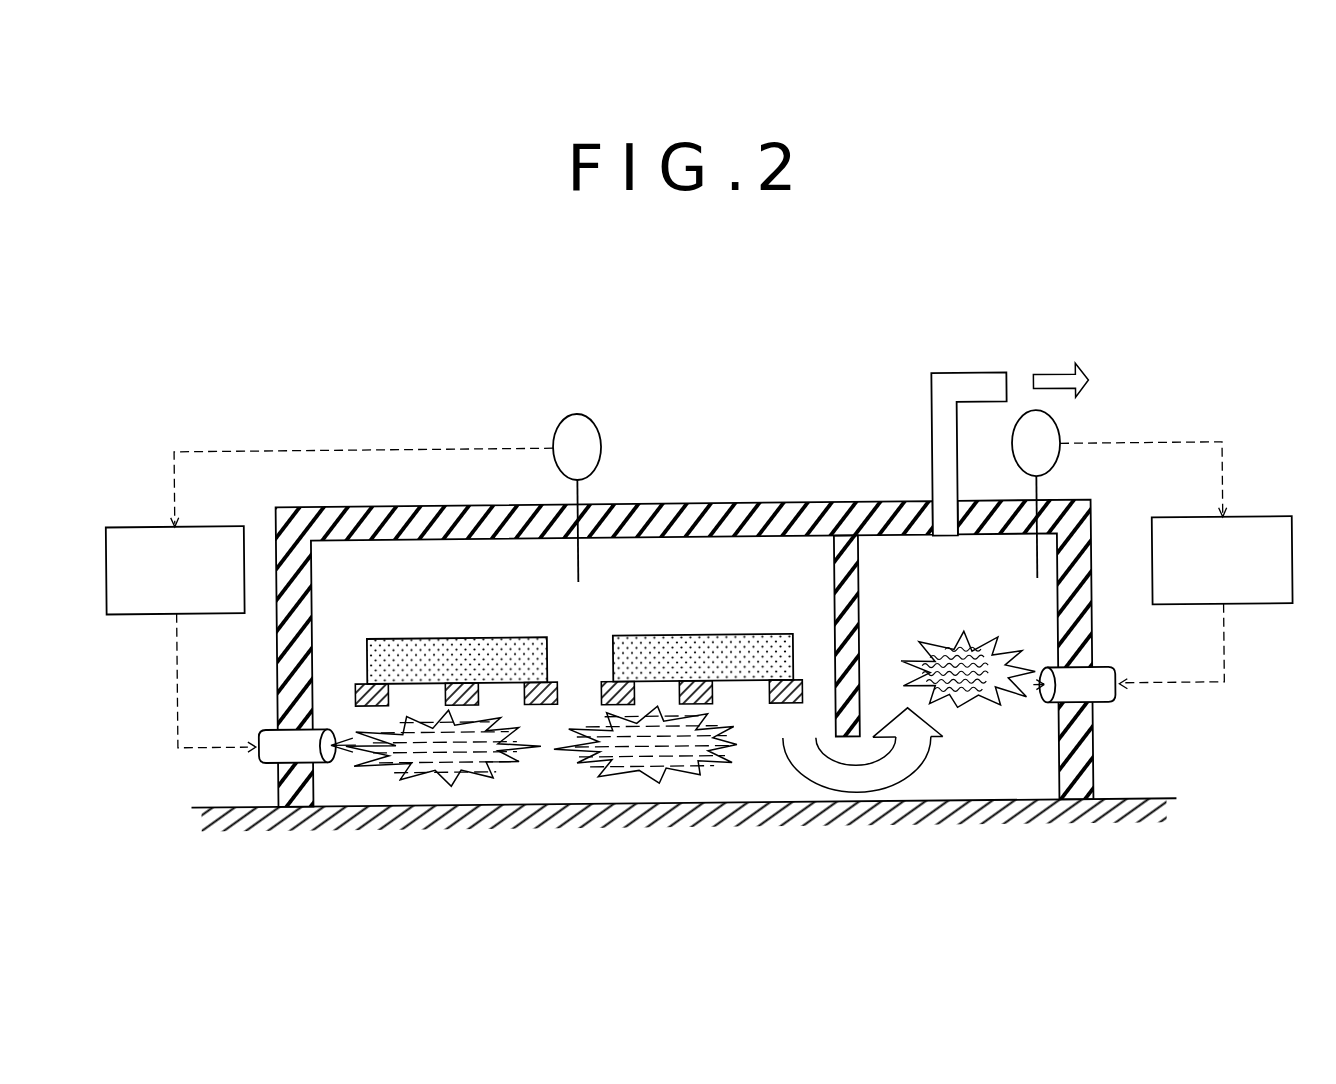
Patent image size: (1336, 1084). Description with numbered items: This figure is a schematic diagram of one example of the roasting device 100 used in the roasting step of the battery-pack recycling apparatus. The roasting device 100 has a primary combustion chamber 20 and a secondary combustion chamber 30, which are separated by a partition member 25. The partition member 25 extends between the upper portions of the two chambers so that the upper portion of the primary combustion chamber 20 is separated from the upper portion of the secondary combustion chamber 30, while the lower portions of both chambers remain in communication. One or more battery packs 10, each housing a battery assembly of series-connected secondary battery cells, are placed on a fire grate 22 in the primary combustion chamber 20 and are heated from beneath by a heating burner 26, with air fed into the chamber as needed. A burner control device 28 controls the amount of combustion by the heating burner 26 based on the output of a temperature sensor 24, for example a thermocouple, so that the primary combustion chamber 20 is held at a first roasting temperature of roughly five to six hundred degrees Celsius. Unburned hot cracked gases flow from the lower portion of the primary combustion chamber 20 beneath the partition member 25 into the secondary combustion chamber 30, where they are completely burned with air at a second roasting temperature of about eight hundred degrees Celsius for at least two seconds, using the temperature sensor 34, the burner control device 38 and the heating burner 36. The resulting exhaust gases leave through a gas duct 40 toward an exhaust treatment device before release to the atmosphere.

The roasting device 100 is at (727, 387).
The battery pack 10 is at (433, 648).
The primary combustion chamber 20 is at (715, 548).
The fire grate 22 is at (360, 680).
The temperature sensor 24 is at (579, 413).
The partition member 25 is at (861, 618).
The heating burner 26 is at (272, 761).
The burner control device 28 is at (142, 522).
The secondary combustion chamber 30 is at (912, 555).
The temperature sensor 34 is at (1050, 418).
The heating burner 36 is at (1113, 706).
The burner control device 38 is at (1258, 610).
The gas duct 40 is at (973, 375).